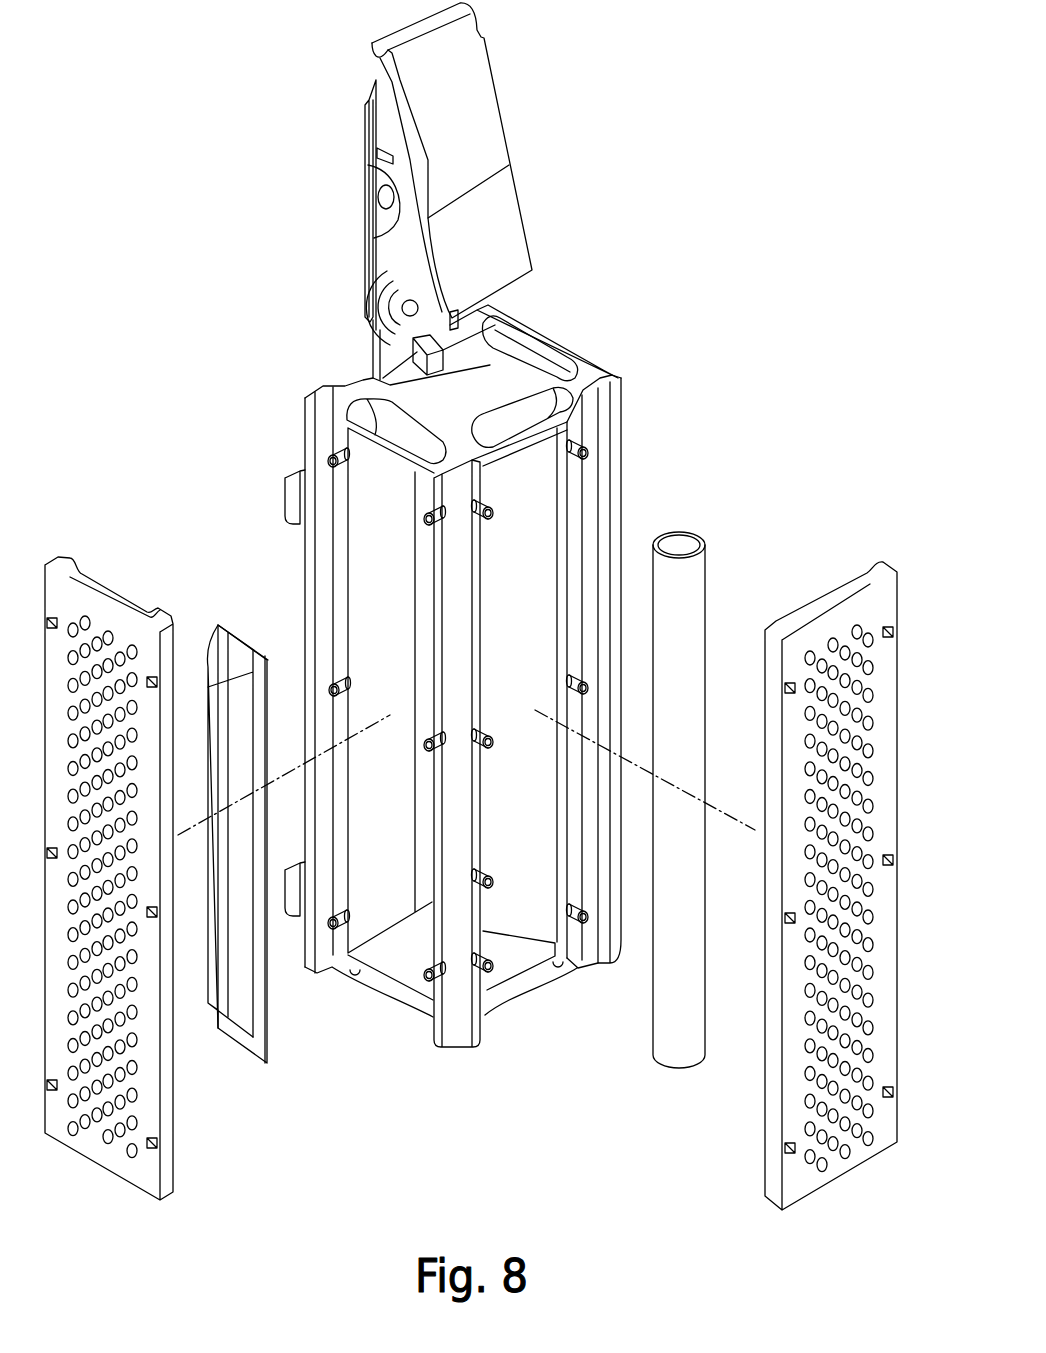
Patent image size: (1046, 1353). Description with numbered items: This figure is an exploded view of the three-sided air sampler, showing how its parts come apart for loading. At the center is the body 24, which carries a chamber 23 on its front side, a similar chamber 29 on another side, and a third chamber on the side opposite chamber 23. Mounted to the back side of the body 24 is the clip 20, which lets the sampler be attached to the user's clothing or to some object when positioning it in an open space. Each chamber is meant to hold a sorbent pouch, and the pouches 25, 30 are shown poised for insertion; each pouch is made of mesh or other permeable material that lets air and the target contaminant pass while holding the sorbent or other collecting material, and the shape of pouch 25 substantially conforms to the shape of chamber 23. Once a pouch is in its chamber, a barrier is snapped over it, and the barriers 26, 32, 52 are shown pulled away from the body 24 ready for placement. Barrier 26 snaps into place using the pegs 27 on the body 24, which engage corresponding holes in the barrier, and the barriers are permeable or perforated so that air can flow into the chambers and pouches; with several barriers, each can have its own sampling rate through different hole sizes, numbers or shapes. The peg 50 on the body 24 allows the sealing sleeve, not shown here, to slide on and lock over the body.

The clip 20 is at (500, 112).
The chamber 23 is at (405, 835).
The body 24 is at (302, 400).
The pouch 25 is at (222, 627).
The barrier 26 is at (172, 1195).
The pegs 27 is at (428, 990).
The chamber 29 is at (548, 510).
The pouch 30 is at (690, 537).
The barrier 32 is at (900, 650).
The peg 50 is at (292, 470).
The barrier 52 is at (590, 355).